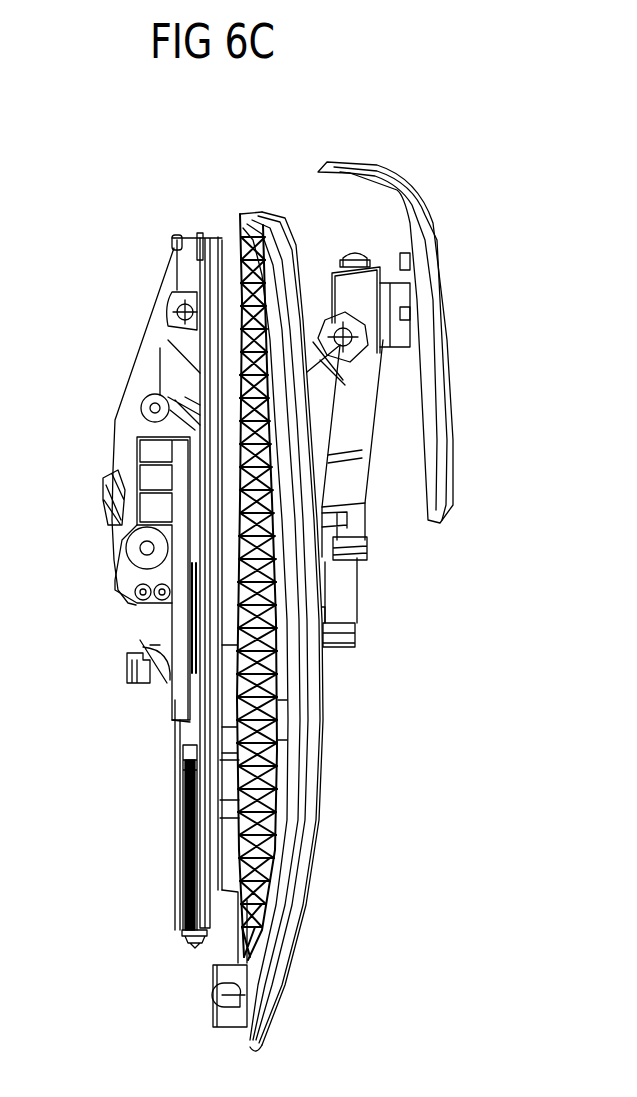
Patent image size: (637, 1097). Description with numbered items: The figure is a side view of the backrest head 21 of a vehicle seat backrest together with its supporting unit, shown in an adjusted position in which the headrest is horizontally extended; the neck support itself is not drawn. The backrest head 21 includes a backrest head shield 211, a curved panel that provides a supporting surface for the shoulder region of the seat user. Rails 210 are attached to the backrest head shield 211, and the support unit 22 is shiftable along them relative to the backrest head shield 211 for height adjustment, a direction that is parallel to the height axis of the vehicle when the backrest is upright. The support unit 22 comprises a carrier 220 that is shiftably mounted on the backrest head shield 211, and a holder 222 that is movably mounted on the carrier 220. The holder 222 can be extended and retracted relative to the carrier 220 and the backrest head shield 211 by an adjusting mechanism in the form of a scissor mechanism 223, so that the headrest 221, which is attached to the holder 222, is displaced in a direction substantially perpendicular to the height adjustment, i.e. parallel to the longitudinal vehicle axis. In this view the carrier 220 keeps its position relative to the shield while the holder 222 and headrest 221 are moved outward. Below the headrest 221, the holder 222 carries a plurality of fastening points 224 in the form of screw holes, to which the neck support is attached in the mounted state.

The backrest head 21 is at (322, 631).
The backrest head shield 211 is at (310, 803).
The support unit 22 is at (149, 279).
The carrier 220 is at (124, 423).
The headrest 221 is at (423, 260).
The holder 222 is at (352, 503).
The scissor mechanism 223 is at (195, 345).
The fastening points 224 is at (358, 622).
The rails 210 is at (190, 620).